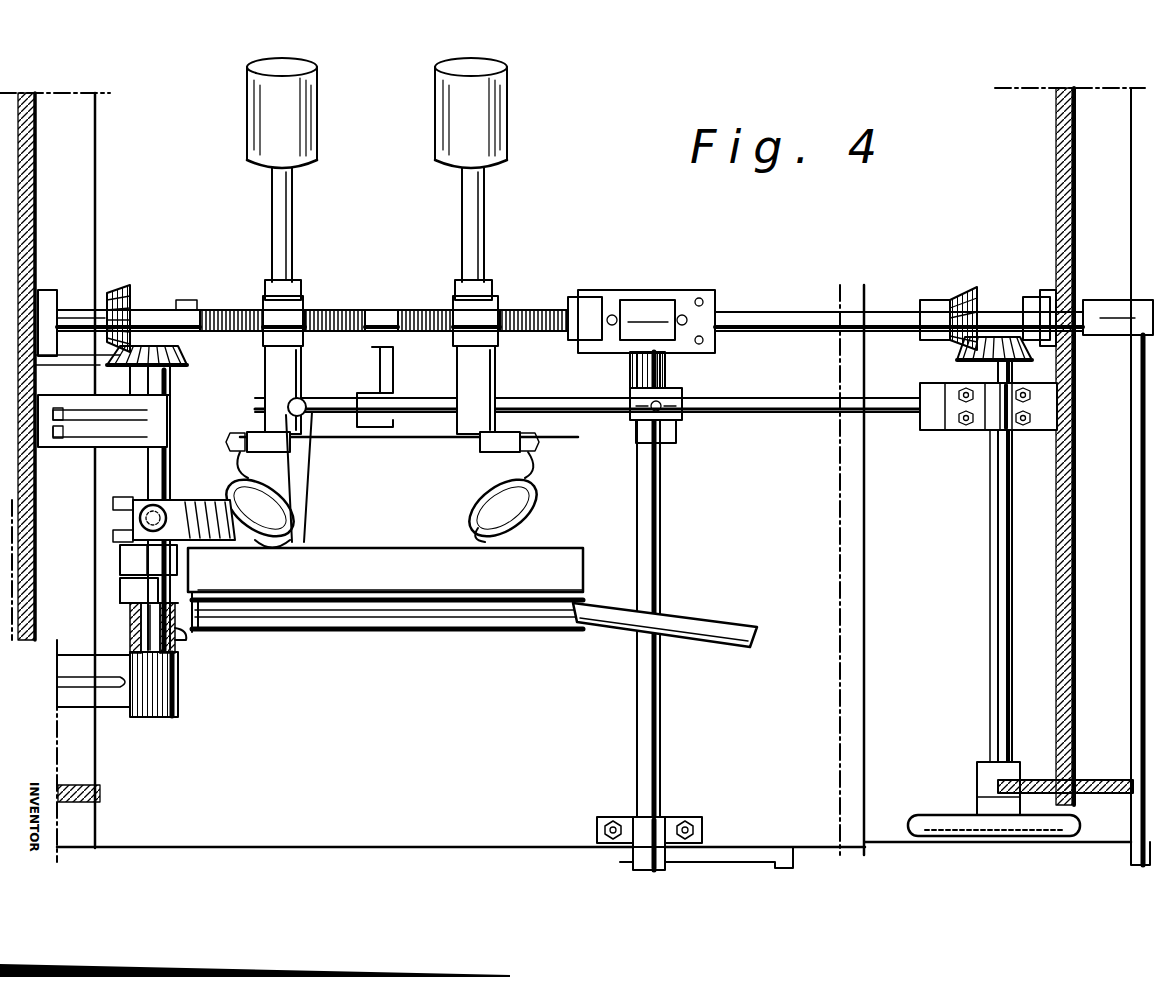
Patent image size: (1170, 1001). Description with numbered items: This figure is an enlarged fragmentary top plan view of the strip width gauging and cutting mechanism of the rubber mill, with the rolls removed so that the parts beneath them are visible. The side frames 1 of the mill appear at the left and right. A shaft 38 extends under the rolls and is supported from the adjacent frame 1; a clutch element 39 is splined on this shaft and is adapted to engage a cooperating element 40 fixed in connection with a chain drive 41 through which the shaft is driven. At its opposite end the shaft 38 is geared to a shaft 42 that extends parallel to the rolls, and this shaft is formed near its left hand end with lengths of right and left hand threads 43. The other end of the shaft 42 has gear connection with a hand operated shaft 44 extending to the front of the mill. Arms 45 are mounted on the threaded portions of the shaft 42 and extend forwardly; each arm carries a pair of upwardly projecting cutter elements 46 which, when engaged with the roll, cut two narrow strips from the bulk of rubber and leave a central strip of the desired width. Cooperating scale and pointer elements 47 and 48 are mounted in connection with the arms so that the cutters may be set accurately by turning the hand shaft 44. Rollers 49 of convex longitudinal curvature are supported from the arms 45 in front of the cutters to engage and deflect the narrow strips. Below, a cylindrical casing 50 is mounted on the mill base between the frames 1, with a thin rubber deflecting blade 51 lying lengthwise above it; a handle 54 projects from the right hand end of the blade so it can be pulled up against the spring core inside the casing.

The side frames 1 is at (43, 240).
The shaft 38 is at (160, 465).
The clutch element 39 is at (135, 555).
The cooperating element 40 is at (135, 590).
The chain drive 41 is at (190, 637).
The shaft 42 is at (148, 315).
The right and left hand threads 43 is at (425, 310).
The hand operated shaft 44 is at (1005, 616).
The arms 45 is at (275, 360).
The cutter elements 46 is at (290, 452).
The scale element 47 is at (400, 440).
The pointer element 48 is at (480, 398).
The rollers 49 is at (275, 510).
The cylindrical casing 50 is at (433, 633).
The rubber deflecting blade 51 is at (338, 608).
The handle 54 is at (690, 628).